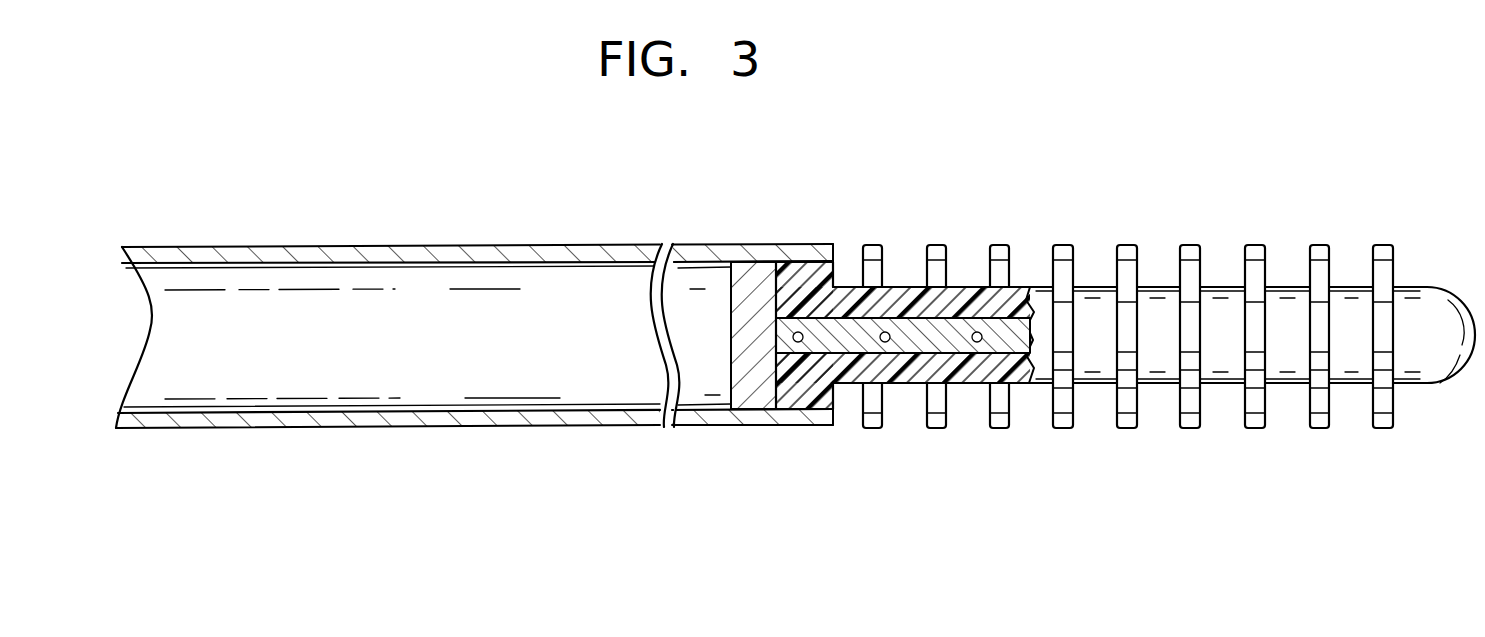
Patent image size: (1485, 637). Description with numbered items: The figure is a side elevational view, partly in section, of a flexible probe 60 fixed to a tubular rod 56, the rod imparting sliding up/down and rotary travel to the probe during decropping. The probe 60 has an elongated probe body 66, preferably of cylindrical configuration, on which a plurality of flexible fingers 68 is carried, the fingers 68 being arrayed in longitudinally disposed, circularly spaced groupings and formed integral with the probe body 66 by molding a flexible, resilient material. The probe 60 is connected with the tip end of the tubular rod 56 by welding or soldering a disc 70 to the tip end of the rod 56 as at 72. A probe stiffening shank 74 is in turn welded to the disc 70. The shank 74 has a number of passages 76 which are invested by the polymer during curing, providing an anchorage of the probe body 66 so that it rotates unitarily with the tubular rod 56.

The tubular rod 56 is at (490, 246).
The flexible probe 60 is at (1152, 216).
The probe body 66 is at (1224, 290).
The flexible fingers 68 is at (994, 246).
The disc 70 is at (748, 401).
The weld 72 is at (790, 266).
The probe stiffening shank 74 is at (931, 346).
The passages 76 is at (1018, 287).